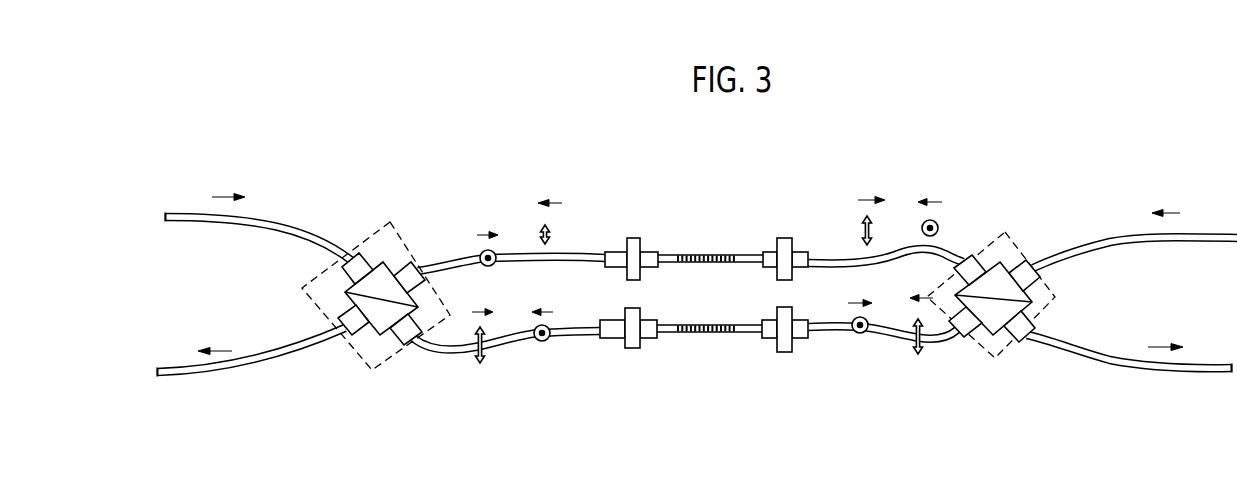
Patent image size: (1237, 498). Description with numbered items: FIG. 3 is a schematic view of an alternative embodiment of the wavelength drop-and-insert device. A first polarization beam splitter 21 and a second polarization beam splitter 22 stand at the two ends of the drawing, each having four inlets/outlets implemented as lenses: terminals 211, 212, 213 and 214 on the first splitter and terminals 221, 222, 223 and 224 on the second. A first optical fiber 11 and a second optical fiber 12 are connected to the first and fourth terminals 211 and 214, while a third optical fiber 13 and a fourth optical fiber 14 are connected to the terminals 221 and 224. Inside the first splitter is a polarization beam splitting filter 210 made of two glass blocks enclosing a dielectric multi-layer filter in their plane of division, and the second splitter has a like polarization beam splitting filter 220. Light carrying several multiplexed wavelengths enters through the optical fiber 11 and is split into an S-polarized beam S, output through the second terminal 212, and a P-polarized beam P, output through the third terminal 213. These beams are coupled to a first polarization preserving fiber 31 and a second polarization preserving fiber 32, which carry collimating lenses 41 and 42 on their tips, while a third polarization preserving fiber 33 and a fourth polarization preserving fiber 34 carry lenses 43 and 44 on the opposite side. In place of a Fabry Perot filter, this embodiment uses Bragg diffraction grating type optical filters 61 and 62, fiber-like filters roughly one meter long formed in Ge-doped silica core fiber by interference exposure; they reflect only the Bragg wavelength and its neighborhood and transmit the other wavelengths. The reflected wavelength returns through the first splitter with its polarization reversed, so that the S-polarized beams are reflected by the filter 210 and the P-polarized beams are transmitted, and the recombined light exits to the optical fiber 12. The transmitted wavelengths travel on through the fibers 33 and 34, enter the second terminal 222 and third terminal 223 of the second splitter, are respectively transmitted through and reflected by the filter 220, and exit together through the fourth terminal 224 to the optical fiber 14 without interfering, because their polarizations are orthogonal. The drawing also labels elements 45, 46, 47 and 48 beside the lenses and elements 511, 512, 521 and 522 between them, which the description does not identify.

The first optical fiber 11 is at (187, 212).
The second optical fiber 12 is at (186, 378).
The third optical fiber 13 is at (1219, 234).
The fourth optical fiber 14 is at (1192, 373).
The first polarization beam splitter 21 is at (390, 222).
The second polarization beam splitter 22 is at (1005, 232).
The polarization beam splitting filter 210 is at (380, 305).
The first inlet/outlet 211 is at (356, 253).
The second inlet/outlet 212 is at (416, 263).
The third inlet/outlet 213 is at (404, 343).
The fourth inlet/outlet 214 is at (345, 332).
The second polarization beam splitting filter 220 is at (998, 305).
The first inlet/outlet 221 is at (1030, 262).
The second inlet/outlet 222 is at (968, 258).
The third inlet/outlet 223 is at (958, 331).
The fourth inlet/outlet 224 is at (1020, 338).
The first polarization preserving fiber 31 is at (568, 255).
The second polarization preserving fiber 32 is at (514, 340).
The third polarization preserving fiber 33 is at (890, 257).
The fourth polarization preserving fiber 34 is at (896, 335).
The collimating lens 41 is at (614, 252).
The collimating lens 42 is at (612, 333).
The third lens 43 is at (800, 252).
The fourth lens 44 is at (800, 338).
The fiber holder 45 is at (650, 254).
The fiber holder 46 is at (650, 338).
The fiber holder 47 is at (768, 254).
The fiber holder 48 is at (768, 336).
The mounting plate 511 is at (633, 237).
The mounting plate 512 is at (633, 345).
The mounting plate 521 is at (784, 238).
The mounting plate 522 is at (786, 351).
The Bragg diffraction grating type optical filter 61 is at (698, 253).
The Bragg diffraction grating type optical filter 62 is at (720, 332).
The S-polarized beam S is at (453, 255).
The P-polarized beam P is at (477, 355).